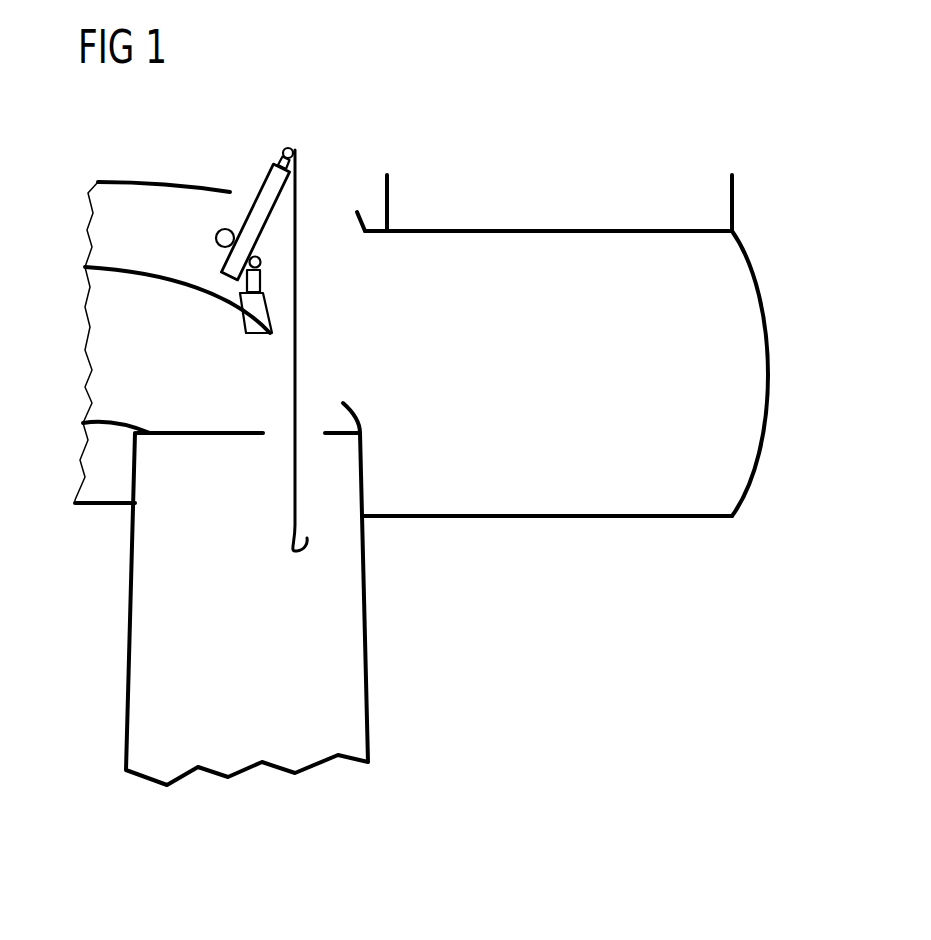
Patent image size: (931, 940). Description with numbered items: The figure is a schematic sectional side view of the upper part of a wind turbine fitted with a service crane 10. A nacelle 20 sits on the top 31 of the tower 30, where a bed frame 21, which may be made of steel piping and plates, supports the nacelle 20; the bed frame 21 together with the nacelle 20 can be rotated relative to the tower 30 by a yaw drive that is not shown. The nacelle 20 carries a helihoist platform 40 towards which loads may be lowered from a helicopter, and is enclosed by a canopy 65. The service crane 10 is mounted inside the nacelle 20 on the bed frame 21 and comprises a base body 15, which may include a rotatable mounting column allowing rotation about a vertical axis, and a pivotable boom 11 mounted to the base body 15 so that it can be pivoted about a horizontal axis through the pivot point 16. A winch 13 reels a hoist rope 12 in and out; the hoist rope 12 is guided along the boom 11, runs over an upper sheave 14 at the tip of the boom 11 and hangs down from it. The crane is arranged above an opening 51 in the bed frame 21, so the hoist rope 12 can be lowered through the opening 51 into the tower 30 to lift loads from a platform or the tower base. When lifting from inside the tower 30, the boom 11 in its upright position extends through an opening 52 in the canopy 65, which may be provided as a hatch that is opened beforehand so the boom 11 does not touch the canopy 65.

The service crane 10 is at (244, 172).
The boom 11 is at (252, 222).
The hoist rope 12 is at (293, 373).
The winch 13 is at (216, 238).
The upper sheave 14 is at (288, 148).
The base body 15 is at (261, 282).
The pivot point 16 is at (261, 261).
The nacelle 20 is at (594, 376).
The bed frame 21 is at (187, 291).
The tower 30 is at (278, 594).
The top of tower 31 is at (362, 477).
The helihoist platform 40 is at (648, 229).
The opening 51 is at (325, 383).
The opening 52 is at (328, 180).
The canopy 65 is at (637, 517).